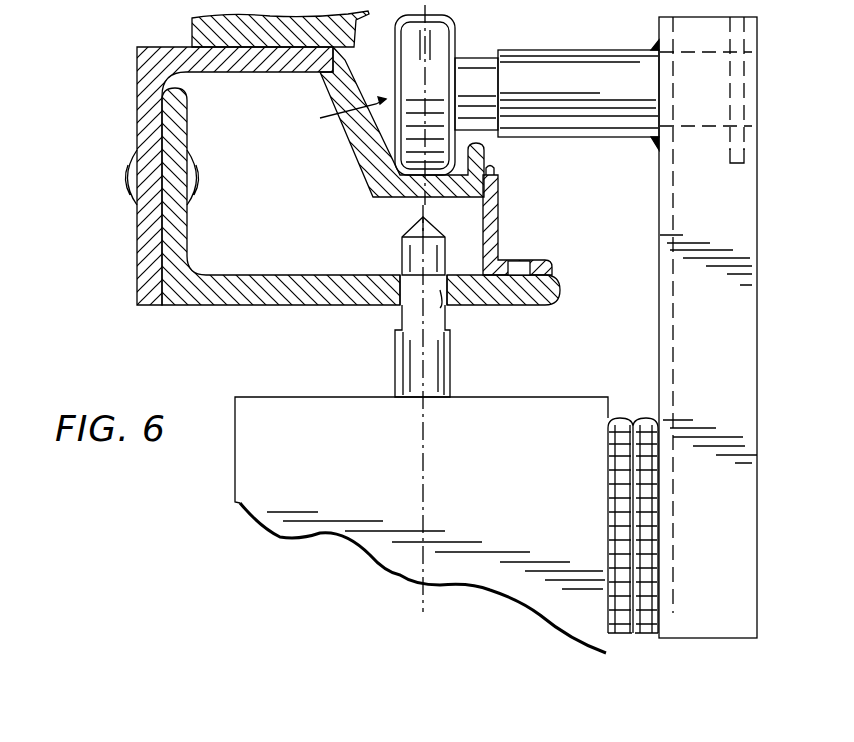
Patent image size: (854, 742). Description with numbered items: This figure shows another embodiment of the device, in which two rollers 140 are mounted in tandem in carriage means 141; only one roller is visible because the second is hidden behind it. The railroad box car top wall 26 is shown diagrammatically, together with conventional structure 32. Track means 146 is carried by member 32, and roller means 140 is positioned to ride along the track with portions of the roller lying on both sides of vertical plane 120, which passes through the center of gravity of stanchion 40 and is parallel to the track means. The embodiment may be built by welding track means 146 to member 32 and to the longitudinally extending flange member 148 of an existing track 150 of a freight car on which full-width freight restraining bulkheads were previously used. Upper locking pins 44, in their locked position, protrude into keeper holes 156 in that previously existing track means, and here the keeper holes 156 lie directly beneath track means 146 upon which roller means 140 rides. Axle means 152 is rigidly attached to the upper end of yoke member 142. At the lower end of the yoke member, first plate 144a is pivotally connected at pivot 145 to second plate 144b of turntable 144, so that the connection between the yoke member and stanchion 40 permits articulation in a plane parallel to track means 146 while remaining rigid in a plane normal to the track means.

The railroad box car top wall 26 is at (210, 30).
The conventional structure 32 is at (137, 92).
The stanchion 40 is at (527, 477).
The upper locking pin 44 is at (408, 250).
The vertical plane 120 is at (423, 450).
The roller 140 is at (456, 37).
The carriage means 141 is at (334, 113).
The yoke member 142 is at (740, 340).
The turntable 144 is at (637, 416).
The first plate 144a is at (645, 635).
The second plate 144b is at (622, 635).
The pivot 145 is at (628, 520).
The track means 146 is at (395, 197).
The longitudinally extending flange member 148 is at (498, 235).
The existing track 150 is at (348, 305).
The axle means 152 is at (480, 117).
The keeper hole 156 is at (445, 300).